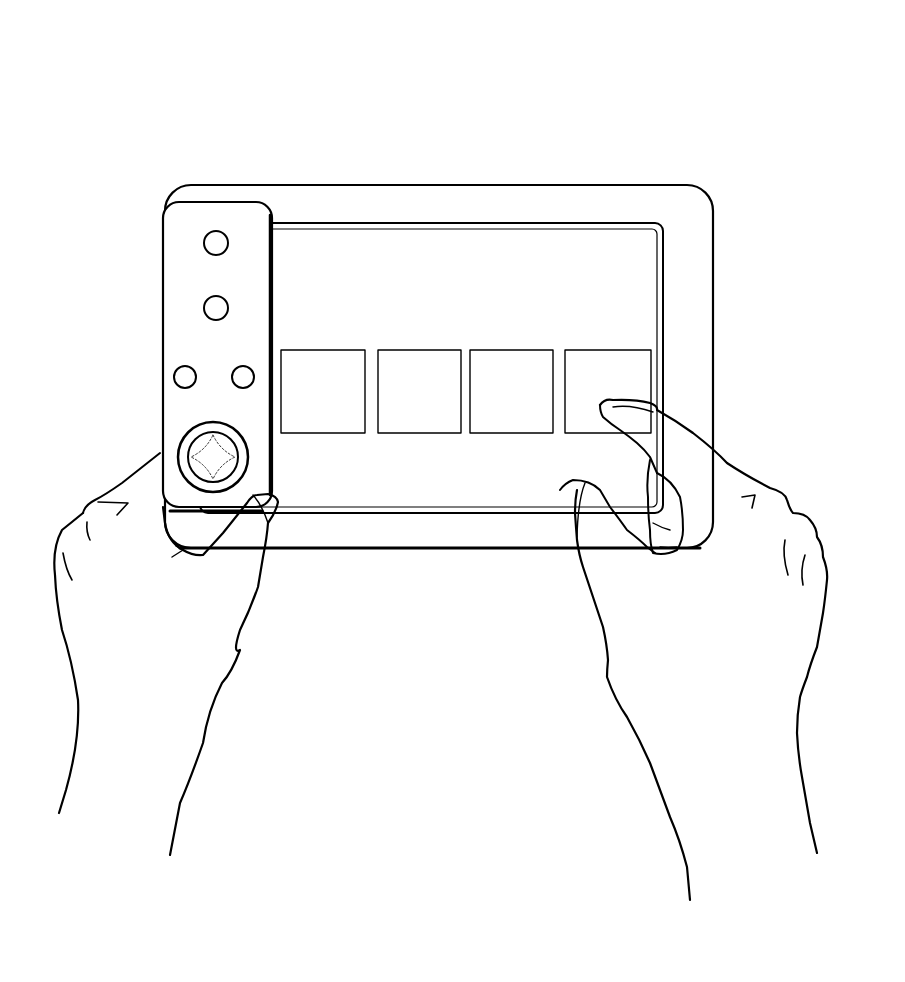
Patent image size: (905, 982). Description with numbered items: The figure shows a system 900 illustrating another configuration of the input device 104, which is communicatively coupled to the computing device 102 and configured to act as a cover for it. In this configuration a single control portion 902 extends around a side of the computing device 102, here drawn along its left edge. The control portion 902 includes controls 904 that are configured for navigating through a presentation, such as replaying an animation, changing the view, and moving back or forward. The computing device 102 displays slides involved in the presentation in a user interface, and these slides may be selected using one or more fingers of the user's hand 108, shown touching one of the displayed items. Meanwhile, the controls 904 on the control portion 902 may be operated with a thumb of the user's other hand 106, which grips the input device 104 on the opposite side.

The system 900 is at (160, 68).
The computing device 102 is at (308, 160).
The input device 104 is at (154, 254).
The control portion 902 is at (172, 210).
The controls 904 is at (176, 322).
The user's other hand 106 is at (160, 656).
The user's hand 108 is at (733, 649).